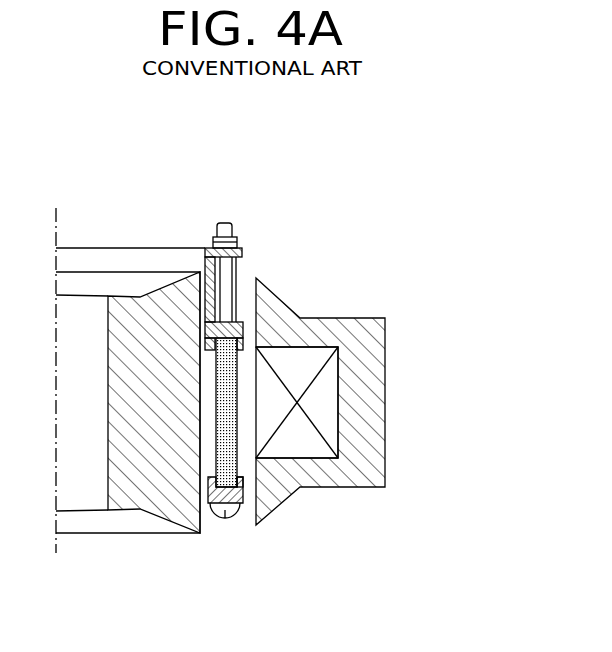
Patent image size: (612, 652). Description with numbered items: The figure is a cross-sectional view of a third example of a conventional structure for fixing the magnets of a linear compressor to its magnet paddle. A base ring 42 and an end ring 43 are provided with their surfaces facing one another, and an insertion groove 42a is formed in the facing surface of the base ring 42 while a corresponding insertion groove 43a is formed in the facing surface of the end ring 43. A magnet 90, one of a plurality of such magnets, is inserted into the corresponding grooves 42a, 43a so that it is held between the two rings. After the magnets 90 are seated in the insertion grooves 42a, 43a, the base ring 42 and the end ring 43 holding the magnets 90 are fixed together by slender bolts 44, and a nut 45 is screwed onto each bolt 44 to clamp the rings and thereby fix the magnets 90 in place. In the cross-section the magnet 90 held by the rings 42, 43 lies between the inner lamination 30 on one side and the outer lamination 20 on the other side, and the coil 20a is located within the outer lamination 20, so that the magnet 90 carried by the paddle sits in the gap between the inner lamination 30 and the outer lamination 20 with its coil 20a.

The outer lamination 20 is at (385, 430).
The coil 20a is at (338, 367).
The inner lamination 30 is at (163, 513).
The base ring 42 is at (243, 323).
The insertion groove 42a is at (204, 342).
The end ring 43 is at (207, 508).
The insertion groove 43a is at (229, 487).
The slender bolt 44 is at (227, 268).
The nut 45 is at (238, 242).
The magnet 90 is at (233, 372).